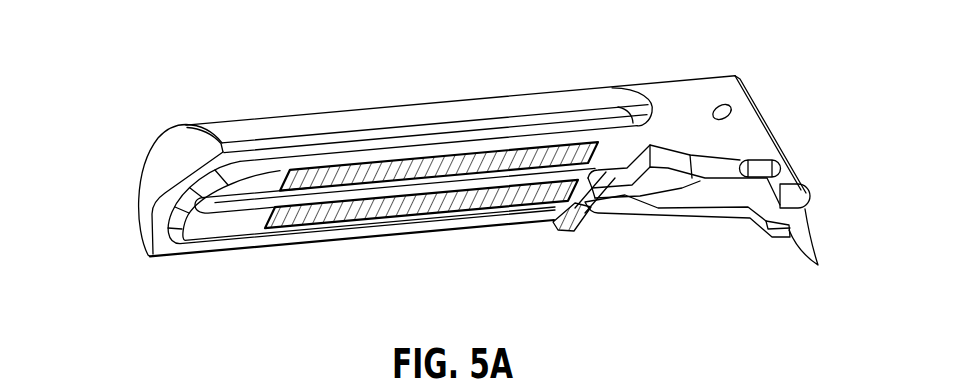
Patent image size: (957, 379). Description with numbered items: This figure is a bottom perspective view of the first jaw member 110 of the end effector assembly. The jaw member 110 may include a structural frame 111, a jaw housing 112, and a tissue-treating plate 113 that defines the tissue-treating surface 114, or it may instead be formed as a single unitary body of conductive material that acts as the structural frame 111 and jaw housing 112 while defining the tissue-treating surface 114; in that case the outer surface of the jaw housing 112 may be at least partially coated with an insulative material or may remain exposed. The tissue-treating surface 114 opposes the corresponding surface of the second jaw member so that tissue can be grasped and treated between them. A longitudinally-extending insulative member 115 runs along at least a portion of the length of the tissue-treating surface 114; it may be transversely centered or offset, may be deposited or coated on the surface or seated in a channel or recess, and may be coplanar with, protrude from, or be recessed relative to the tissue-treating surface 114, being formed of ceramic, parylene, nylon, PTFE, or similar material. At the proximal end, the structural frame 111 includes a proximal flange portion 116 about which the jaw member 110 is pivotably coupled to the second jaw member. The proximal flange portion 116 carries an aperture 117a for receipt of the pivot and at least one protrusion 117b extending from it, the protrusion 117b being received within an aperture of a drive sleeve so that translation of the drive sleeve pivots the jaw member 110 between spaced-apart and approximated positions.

The first jaw member 110 is at (138, 132).
The structural frame 111 is at (660, 97).
The jaw housing 112 is at (362, 122).
The tissue-treating plate 113 is at (478, 213).
The tissue-treating surface 114 is at (306, 195).
The insulative member 115 is at (372, 196).
The proximal flange portion 116 is at (715, 92).
The aperture 117a is at (727, 106).
The protrusion 117b is at (834, 242).